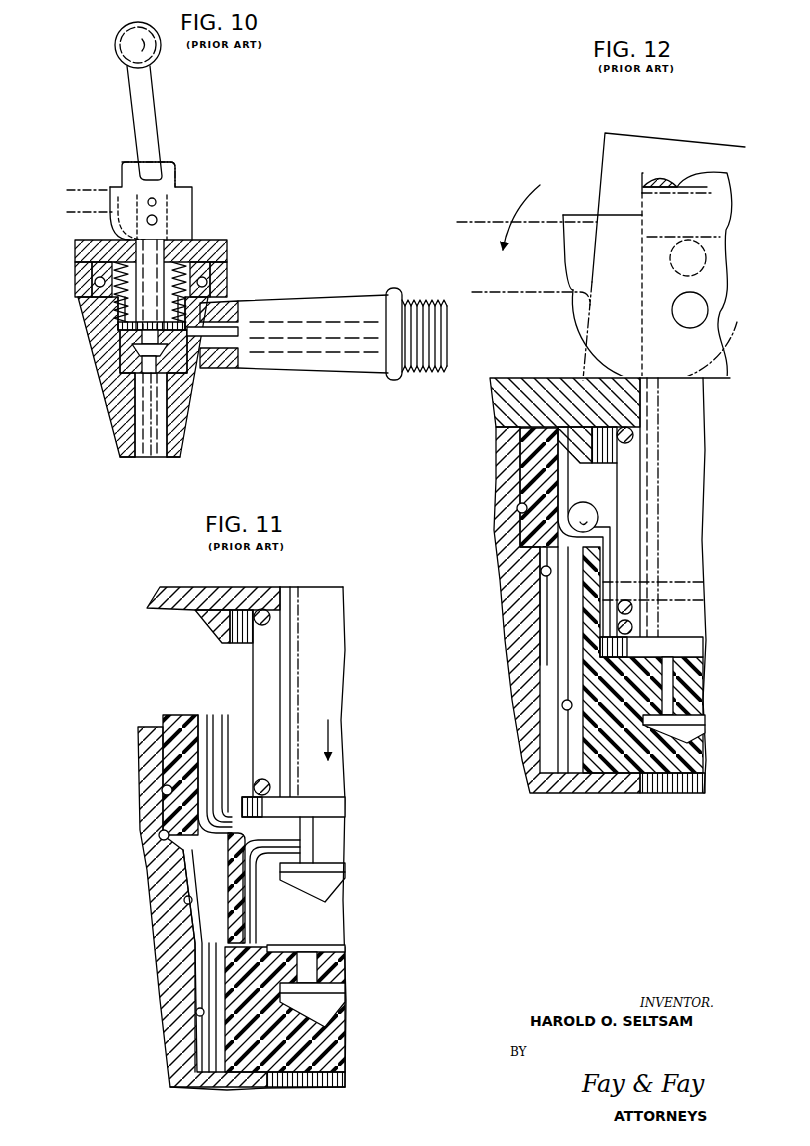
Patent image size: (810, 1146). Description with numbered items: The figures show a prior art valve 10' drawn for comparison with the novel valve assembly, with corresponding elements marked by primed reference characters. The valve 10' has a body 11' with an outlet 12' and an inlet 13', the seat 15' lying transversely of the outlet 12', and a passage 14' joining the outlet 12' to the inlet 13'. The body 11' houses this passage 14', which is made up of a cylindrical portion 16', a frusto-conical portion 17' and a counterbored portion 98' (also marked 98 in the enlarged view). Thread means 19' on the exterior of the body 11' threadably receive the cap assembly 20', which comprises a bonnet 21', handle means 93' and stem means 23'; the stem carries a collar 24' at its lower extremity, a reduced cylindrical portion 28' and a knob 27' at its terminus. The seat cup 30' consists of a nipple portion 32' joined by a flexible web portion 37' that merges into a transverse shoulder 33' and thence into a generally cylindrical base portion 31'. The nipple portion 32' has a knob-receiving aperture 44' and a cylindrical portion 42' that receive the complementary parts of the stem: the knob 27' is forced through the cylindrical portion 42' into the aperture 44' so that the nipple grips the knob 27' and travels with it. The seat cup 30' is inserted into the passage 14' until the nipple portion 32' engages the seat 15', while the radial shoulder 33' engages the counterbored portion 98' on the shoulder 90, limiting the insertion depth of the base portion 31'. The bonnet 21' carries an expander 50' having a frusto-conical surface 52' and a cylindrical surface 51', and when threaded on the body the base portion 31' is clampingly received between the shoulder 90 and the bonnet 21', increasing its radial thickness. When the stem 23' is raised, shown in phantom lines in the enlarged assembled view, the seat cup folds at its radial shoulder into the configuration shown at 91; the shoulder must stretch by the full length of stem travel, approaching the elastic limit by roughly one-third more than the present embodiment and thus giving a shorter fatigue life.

In FIG. 10, the valve 10' is at (66, 150).
In FIG. 11, the valve 10' is at (77, 663).
In FIG. 12, the valve 10' is at (611, 863).
In FIG. 10, the body 11' is at (135, 377).
In FIG. 11, the body 11' is at (170, 907).
In FIG. 12, the body 11' is at (546, 610).
In FIG. 10, the outlet 12' is at (184, 432).
In FIG. 11, the outlet 12' is at (297, 1090).
In FIG. 12, the outlet 12' is at (693, 808).
In FIG. 10, the inlet 13' is at (340, 341).
In FIG. 10, the passage 14' is at (194, 362).
In FIG. 11, the passage 14' is at (142, 973).
In FIG. 12, the passage 14' is at (534, 660).
In FIG. 10, the seat 15' is at (117, 412).
In FIG. 11, the seat 15' is at (252, 1097).
In FIG. 10, the cylindrical portion 16' is at (116, 361).
In FIG. 11, the cylindrical portion 16' is at (151, 1018).
In FIG. 12, the cylindrical portion 16' is at (526, 710).
In FIG. 10, the frusto-conical portion 17' is at (115, 316).
In FIG. 11, the frusto-conical portion 17' is at (139, 903).
In FIG. 12, the frusto-conical portion 17' is at (499, 606).
In FIG. 10, the thread means 19' is at (119, 279).
In FIG. 10, the cap assembly 20' is at (172, 201).
In FIG. 11, the cap assembly 20' is at (211, 575).
In FIG. 12, the cap assembly 20' is at (597, 275).
In FIG. 10, the bonnet 21' is at (181, 254).
In FIG. 12, the bonnet 21' is at (609, 379).
In FIG. 10, the stem means 23' is at (213, 285).
In FIG. 11, the stem means 23' is at (325, 837).
In FIG. 12, the stem means 23' is at (680, 585).
In FIG. 10, the collar 24' is at (104, 337).
In FIG. 11, the collar 24' is at (329, 795).
In FIG. 12, the collar 24' is at (678, 628).
In FIG. 11, the knob 27' is at (351, 873).
In FIG. 12, the knob 27' is at (705, 725).
In FIG. 10, the reduced cylindrical portion 28' is at (239, 327).
In FIG. 11, the reduced cylindrical portion 28' is at (355, 836).
In FIG. 12, the reduced cylindrical portion 28' is at (710, 686).
In FIG. 11, the seat cup 30' is at (157, 1007).
In FIG. 12, the seat cup 30' is at (585, 660).
In FIG. 11, the base portion 31' is at (144, 775).
In FIG. 12, the base portion 31' is at (502, 487).
In FIG. 11, the nipple portion 32' is at (221, 1009).
In FIG. 12, the nipple portion 32' is at (527, 780).
In FIG. 11, the transverse shoulder 33' is at (183, 829).
In FIG. 12, the transverse shoulder 33' is at (627, 532).
In FIG. 11, the flexible web portion 37' is at (268, 888).
In FIG. 12, the flexible web portion 37' is at (524, 616).
In FIG. 11, the cylindrical portion 42' is at (342, 952).
In FIG. 11, the knob-receiving aperture 44' is at (352, 1000).
In FIG. 11, the expander 50' is at (239, 652).
In FIG. 12, the expander 50' is at (538, 445).
In FIG. 11, the cylindrical surface 51' is at (165, 629).
In FIG. 11, the frusto-conical surface 52' is at (192, 637).
In FIG. 11, the shoulder 90 is at (162, 835).
In FIG. 12, the folded configuration 91 is at (597, 504).
In FIG. 10, the handle means 93' is at (170, 101).
In FIG. 12, the handle means 93' is at (601, 256).
In FIG. 12, the counterbored portion 98 is at (483, 519).
In FIG. 10, the counterbored portion 98' is at (116, 293).
In FIG. 11, the counterbored portion 98' is at (129, 791).